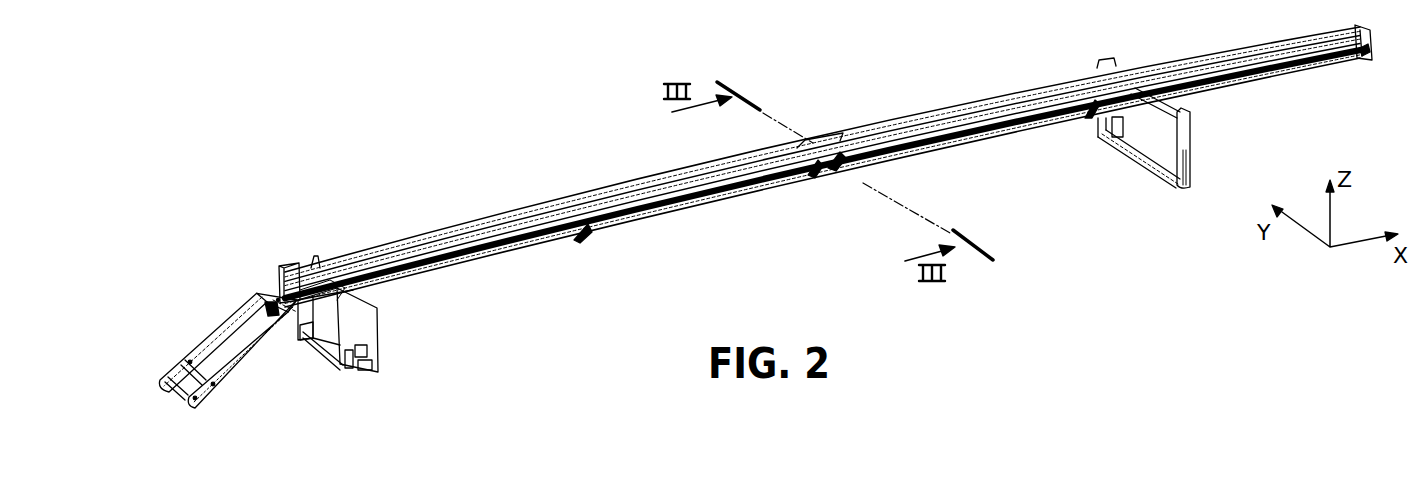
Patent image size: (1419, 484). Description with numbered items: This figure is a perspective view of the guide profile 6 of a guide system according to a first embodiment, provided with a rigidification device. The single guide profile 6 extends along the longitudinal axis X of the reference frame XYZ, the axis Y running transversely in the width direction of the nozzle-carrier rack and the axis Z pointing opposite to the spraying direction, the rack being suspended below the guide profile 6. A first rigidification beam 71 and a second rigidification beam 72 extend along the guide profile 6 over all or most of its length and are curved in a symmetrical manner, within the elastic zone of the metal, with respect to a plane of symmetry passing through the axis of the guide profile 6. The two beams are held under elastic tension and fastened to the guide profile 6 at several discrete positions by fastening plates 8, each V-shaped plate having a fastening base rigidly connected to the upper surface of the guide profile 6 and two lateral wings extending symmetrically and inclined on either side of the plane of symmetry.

The guide profile 6 is at (713, 210).
The first rigidification beam 71 is at (457, 238).
The second rigidification beam 72 is at (645, 200).
The fastening plates 8 is at (302, 335).